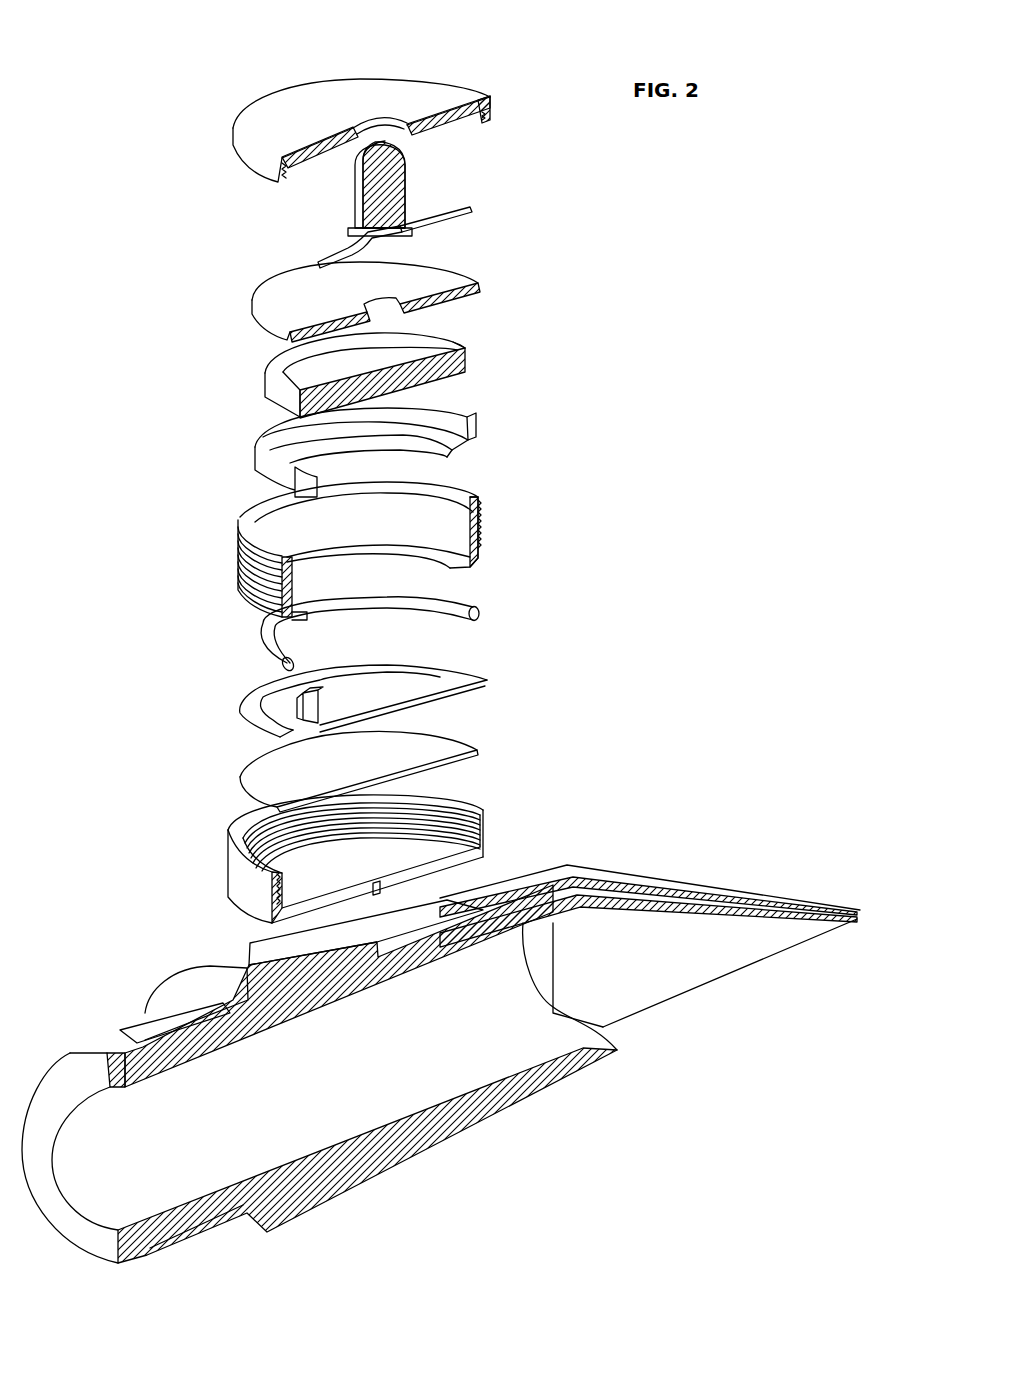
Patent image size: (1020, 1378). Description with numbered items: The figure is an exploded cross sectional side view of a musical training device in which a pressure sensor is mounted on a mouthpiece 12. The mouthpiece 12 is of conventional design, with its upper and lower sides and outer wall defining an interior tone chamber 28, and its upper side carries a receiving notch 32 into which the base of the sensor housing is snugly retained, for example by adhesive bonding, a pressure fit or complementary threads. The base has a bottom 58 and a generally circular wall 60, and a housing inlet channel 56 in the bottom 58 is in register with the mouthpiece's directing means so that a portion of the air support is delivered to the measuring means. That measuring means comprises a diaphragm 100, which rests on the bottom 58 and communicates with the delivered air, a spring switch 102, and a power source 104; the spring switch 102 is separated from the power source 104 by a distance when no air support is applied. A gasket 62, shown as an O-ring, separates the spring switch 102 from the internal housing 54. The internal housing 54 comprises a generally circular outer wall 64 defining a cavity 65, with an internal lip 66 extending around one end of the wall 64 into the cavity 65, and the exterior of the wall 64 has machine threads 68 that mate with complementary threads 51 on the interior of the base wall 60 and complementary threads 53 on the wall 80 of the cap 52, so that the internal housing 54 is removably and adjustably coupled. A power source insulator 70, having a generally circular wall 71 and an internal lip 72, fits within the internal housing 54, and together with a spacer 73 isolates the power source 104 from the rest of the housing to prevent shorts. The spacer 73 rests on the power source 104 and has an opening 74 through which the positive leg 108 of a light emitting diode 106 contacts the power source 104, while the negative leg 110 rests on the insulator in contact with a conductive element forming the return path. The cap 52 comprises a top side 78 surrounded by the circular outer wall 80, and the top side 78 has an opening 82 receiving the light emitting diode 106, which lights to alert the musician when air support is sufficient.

The mouthpiece 12 is at (862, 912).
The interior tone chamber 28 is at (316, 1100).
The receiving notch 32 is at (273, 962).
The complementary threads 51 is at (490, 830).
The cap 52 is at (213, 112).
The complementary threads 53 is at (455, 145).
The internal housing 54 is at (212, 565).
The housing inlet channel 56 is at (380, 887).
The bottom 58 is at (316, 858).
The circular wall 60 is at (230, 877).
The gasket 62 is at (482, 615).
The outer wall 64 is at (242, 546).
The cavity 65 is at (322, 525).
The internal lip 66 is at (482, 562).
The machine threads 68 is at (247, 596).
The power source insulator 70 is at (232, 418).
The circular wall 71 is at (257, 460).
The internal lip 72 is at (466, 453).
The spacer 73 is at (480, 287).
The opening 74 is at (398, 298).
The top side 78 is at (330, 98).
The outer wall 80 is at (262, 163).
The opening 82 is at (400, 118).
The diaphragm 100 is at (480, 751).
The spring switch 102 is at (482, 681).
The power source 104 is at (467, 360).
The light emitting diode 106 is at (410, 192).
The positive leg 108 is at (352, 252).
The negative leg 110 is at (474, 210).